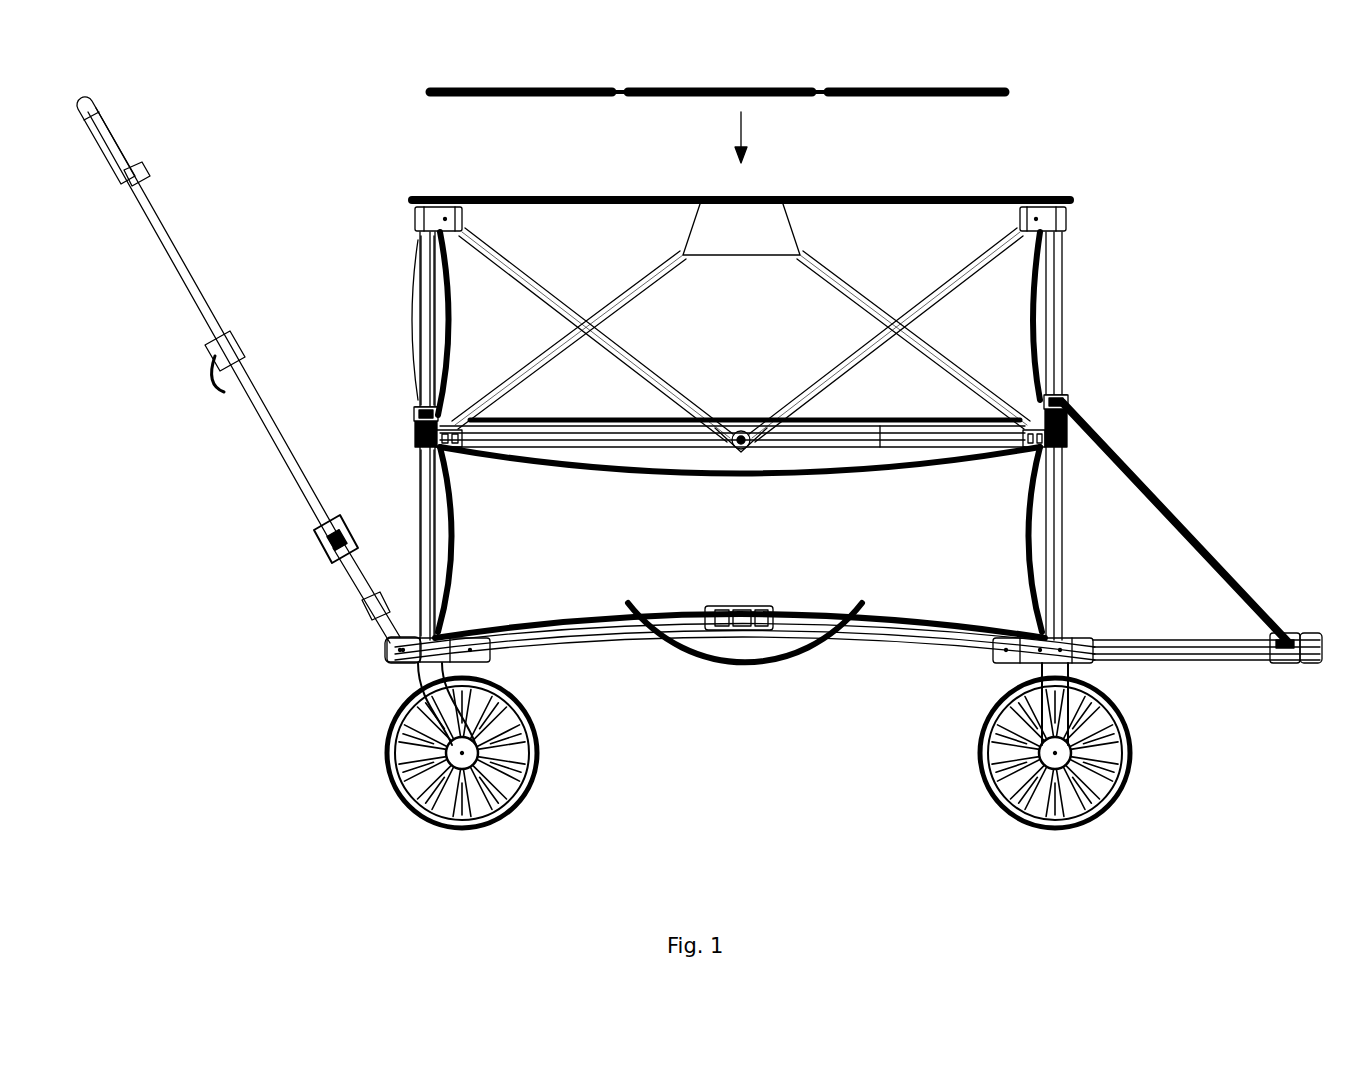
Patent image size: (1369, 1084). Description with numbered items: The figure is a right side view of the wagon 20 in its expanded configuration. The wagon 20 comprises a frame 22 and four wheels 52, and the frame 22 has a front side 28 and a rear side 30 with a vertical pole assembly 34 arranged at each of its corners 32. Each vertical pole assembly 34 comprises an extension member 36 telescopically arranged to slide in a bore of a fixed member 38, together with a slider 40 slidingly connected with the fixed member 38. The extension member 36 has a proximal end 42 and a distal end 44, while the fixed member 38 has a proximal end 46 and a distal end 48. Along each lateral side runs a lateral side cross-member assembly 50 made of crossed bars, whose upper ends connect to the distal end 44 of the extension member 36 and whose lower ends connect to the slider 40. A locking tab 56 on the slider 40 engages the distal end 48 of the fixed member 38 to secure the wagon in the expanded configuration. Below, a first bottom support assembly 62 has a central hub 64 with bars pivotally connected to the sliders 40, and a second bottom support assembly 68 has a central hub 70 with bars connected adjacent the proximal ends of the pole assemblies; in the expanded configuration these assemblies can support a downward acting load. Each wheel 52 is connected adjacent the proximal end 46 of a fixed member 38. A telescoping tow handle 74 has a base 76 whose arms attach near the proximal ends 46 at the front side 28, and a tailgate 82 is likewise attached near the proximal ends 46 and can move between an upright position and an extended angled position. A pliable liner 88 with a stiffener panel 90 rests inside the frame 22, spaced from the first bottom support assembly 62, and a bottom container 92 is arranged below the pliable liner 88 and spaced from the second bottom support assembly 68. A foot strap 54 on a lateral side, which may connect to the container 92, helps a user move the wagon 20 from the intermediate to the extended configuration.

The wagon 20 is at (362, 92).
The frame 22 is at (1135, 262).
The front side 28 is at (354, 404).
The rear side 30 is at (1167, 436).
The corners 32 is at (412, 197).
The vertical pole assembly 34 is at (420, 300).
The extension member 36 is at (1060, 315).
The fixed member 38 is at (430, 540).
The slider 40 is at (425, 422).
The proximal end of extension member 42 is at (1067, 197).
The distal end of extension member 44 is at (420, 395).
The proximal end of fixed member 46 is at (420, 440).
The distal end of fixed member 48 is at (420, 640).
The lateral side cross-member assembly 50 is at (850, 246).
The wheels 52 is at (385, 737).
The foot strap 54 is at (707, 668).
The locking tab 56 is at (1067, 428).
The first bottom support assembly 62 is at (598, 460).
The central hub 64 is at (722, 478).
The second bottom support assembly 68 is at (627, 667).
The central hub 70 is at (752, 656).
The tow handle 74 is at (207, 337).
The base 76 is at (405, 650).
The tailgate 82 is at (1200, 560).
The pliable liner 88 is at (880, 428).
The stiffener panel 90 is at (992, 81).
The container 92 is at (985, 622).